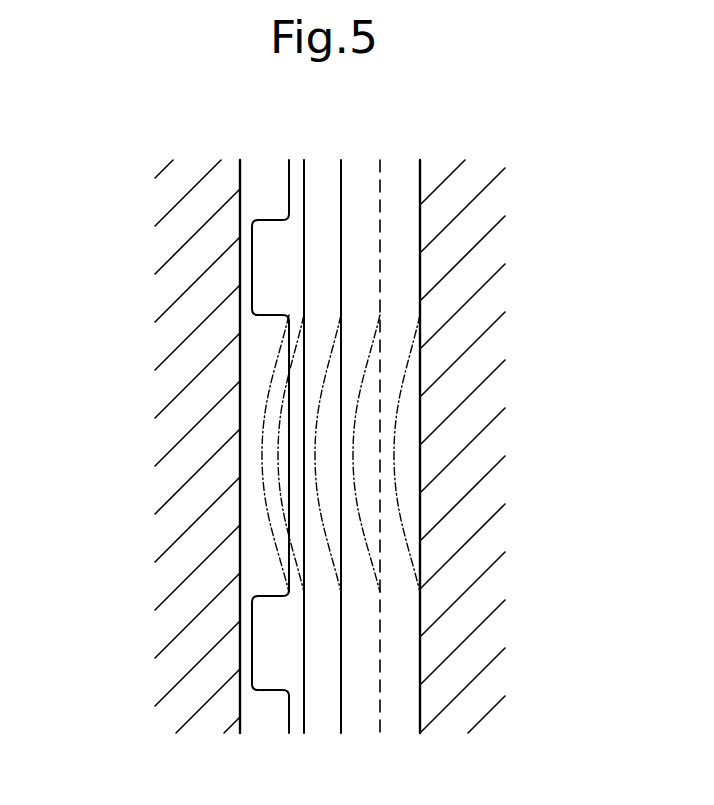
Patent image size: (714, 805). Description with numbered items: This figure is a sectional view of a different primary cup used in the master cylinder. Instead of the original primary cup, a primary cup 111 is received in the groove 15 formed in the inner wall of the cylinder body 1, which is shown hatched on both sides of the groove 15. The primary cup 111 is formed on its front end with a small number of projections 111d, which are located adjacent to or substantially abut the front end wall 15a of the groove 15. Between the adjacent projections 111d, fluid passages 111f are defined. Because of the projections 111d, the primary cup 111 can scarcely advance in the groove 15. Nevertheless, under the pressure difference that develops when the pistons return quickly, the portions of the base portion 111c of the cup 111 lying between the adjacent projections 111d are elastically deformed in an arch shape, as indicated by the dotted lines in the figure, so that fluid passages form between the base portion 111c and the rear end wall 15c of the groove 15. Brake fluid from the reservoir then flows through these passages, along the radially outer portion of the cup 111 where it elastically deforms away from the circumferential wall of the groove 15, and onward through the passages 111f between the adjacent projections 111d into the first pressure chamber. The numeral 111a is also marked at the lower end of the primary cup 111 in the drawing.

The cylinder body 1 is at (458, 195).
The groove 15 is at (268, 203).
The front end wall 15a is at (250, 416).
The rear end wall 15c is at (420, 440).
The primary cup 111 is at (360, 210).
The end portion 111a is at (293, 713).
The base portion 111c is at (393, 270).
The projections 111d is at (267, 633).
The fluid passages 111f is at (263, 353).